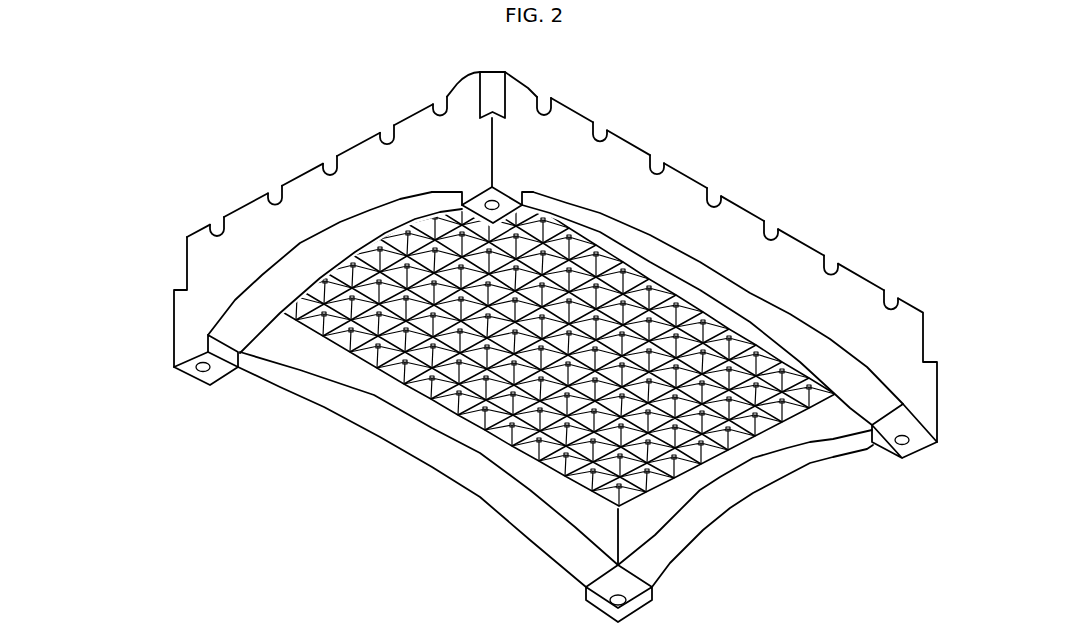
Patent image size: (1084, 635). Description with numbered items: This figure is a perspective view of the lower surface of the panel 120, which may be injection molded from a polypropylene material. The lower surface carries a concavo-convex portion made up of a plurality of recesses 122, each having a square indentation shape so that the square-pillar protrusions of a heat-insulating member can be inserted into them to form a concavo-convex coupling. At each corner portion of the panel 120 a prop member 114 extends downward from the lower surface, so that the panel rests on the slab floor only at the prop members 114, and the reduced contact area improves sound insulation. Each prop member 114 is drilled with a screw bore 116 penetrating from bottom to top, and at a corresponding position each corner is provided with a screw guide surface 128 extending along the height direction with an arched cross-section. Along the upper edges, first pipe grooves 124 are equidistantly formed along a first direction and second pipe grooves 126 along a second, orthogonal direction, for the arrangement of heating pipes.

The prop member 114 is at (183, 340).
The screw bore 116 is at (205, 368).
The panel 120 is at (742, 182).
The recess 122 is at (375, 240).
The first pipe groove 124 is at (440, 99).
The second pipe groove 126 is at (598, 124).
The screw guide surface 128 is at (496, 90).